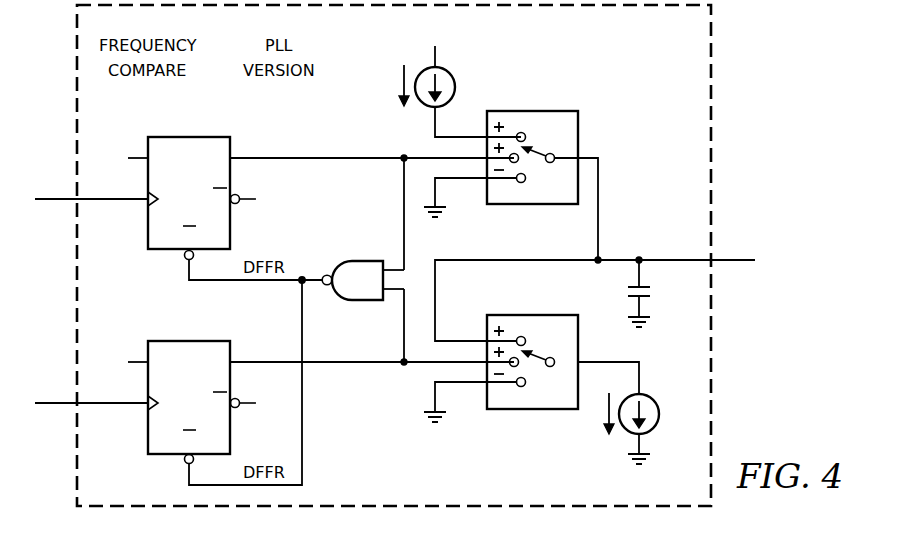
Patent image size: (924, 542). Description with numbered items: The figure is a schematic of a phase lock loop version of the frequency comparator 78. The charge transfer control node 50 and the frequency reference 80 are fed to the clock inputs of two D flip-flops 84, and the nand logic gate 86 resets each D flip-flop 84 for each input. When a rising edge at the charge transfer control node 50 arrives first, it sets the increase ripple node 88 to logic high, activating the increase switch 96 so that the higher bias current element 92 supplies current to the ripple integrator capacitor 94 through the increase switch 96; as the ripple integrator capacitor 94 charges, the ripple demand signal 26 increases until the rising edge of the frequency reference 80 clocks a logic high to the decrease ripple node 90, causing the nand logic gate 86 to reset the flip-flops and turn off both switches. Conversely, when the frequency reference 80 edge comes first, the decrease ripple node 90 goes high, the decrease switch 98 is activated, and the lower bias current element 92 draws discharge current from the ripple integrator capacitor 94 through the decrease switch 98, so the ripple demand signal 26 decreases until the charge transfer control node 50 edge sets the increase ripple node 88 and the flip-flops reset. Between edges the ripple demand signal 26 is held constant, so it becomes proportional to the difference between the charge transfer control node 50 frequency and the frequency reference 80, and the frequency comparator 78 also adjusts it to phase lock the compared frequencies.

The frequency comparator 78 is at (712, 101).
The charge transfer control node 50 is at (56, 198).
The frequency reference 80 is at (54, 404).
The D flip-flop 84 is at (148, 224).
The nand logic gate 86 is at (362, 301).
The increase ripple node 88 is at (330, 158).
The decrease ripple node 90 is at (344, 363).
The bias current element 92 is at (420, 106).
The ripple integrator capacitor 94 is at (652, 290).
The increase switch 96 is at (540, 111).
The decrease switch 98 is at (530, 410).
The ripple demand signal 26 is at (730, 260).